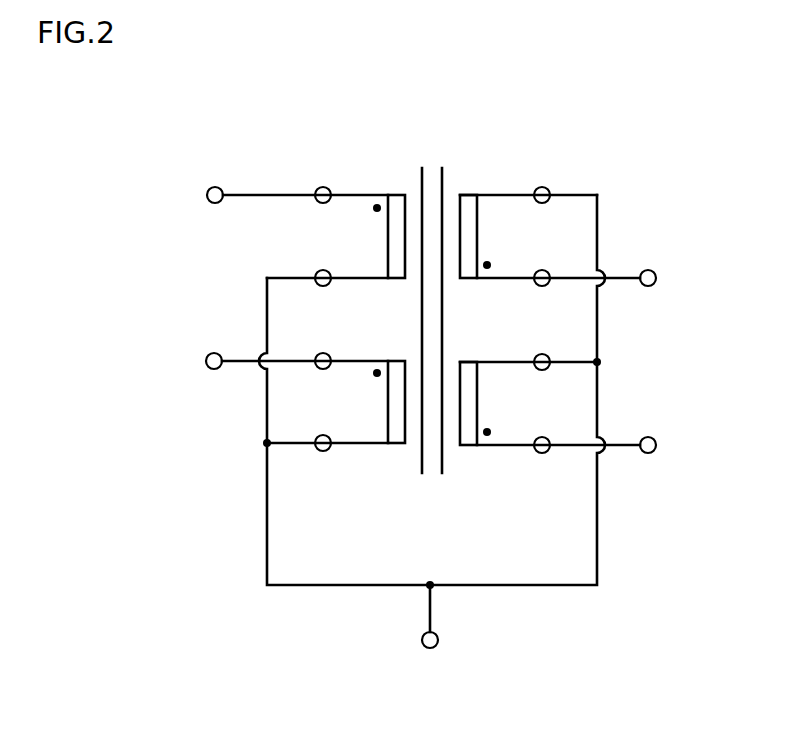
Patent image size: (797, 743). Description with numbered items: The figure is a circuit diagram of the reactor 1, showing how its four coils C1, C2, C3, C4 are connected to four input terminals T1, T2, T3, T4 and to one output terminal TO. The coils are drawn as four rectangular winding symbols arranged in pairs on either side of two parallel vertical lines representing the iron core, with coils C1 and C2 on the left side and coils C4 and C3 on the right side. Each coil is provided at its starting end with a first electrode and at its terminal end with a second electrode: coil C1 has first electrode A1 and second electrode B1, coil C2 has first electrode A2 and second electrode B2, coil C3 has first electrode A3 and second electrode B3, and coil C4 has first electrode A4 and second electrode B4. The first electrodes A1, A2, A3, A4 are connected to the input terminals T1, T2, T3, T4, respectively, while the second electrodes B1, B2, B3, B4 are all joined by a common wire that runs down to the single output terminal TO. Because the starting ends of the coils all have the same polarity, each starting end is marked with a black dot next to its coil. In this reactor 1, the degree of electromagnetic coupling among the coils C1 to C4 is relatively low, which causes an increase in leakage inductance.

The reactor 1 is at (220, 110).
The input terminal T1 is at (206, 195).
The input terminal T2 is at (205, 361).
The input terminal T3 is at (657, 445).
The input terminal T4 is at (657, 278).
The output terminal TO is at (430, 649).
The first electrode A1 is at (323, 186).
The first electrode A2 is at (323, 352).
The first electrode A3 is at (542, 436).
The first electrode A4 is at (542, 269).
The second electrode B1 is at (323, 269).
The second electrode B2 is at (323, 434).
The second electrode B3 is at (542, 353).
The second electrode B4 is at (542, 186).
The coil C1 is at (394, 195).
The coil C2 is at (395, 445).
The coil C3 is at (467, 447).
The coil C4 is at (466, 195).